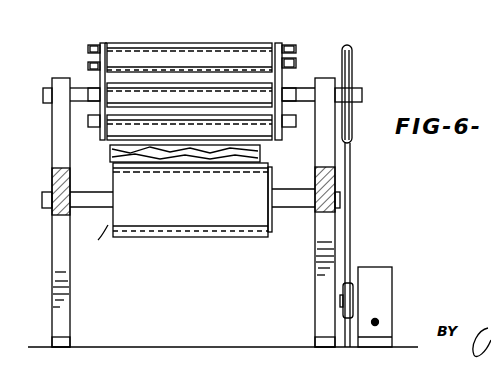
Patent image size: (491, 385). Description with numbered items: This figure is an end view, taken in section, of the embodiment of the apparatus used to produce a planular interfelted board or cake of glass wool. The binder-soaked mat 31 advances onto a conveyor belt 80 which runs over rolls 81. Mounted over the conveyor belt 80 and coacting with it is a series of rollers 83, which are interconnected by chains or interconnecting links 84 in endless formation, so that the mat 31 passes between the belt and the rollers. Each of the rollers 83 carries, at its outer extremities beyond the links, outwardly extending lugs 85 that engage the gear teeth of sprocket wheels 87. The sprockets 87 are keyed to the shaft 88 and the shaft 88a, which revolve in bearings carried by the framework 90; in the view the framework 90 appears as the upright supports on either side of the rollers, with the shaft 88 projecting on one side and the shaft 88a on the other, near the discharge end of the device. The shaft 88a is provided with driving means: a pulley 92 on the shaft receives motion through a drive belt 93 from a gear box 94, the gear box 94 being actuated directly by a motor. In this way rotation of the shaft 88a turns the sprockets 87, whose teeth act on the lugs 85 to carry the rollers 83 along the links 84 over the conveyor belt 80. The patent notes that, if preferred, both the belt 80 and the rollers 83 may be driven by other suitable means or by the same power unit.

The mat 31 is at (118, 157).
The conveyor belt 80 is at (157, 228).
The rolls 81 is at (101, 244).
The rollers 83 is at (200, 45).
The interconnecting links 84 is at (105, 46).
The lugs 85 is at (91, 49).
The sprocket wheels 87 is at (90, 75).
The shaft 88 is at (44, 96).
The shaft 88a is at (362, 96).
The framework 90 is at (53, 142).
The pulley 92 is at (353, 58).
The drive belt 93 is at (352, 218).
The gear box 94 is at (377, 270).